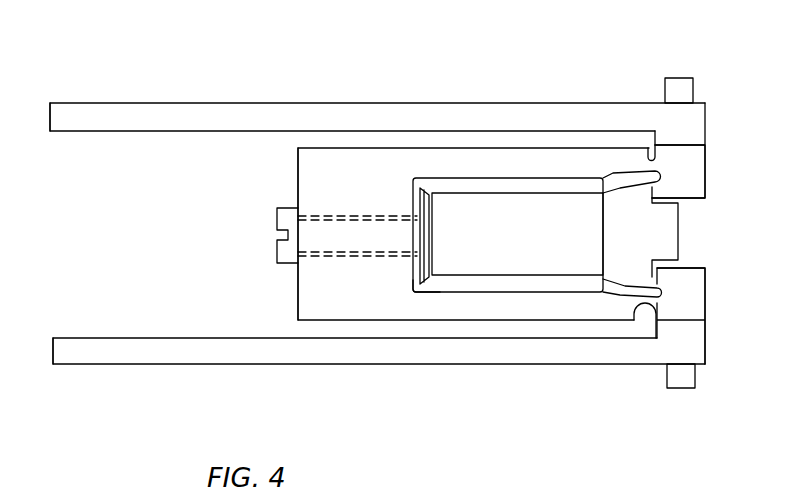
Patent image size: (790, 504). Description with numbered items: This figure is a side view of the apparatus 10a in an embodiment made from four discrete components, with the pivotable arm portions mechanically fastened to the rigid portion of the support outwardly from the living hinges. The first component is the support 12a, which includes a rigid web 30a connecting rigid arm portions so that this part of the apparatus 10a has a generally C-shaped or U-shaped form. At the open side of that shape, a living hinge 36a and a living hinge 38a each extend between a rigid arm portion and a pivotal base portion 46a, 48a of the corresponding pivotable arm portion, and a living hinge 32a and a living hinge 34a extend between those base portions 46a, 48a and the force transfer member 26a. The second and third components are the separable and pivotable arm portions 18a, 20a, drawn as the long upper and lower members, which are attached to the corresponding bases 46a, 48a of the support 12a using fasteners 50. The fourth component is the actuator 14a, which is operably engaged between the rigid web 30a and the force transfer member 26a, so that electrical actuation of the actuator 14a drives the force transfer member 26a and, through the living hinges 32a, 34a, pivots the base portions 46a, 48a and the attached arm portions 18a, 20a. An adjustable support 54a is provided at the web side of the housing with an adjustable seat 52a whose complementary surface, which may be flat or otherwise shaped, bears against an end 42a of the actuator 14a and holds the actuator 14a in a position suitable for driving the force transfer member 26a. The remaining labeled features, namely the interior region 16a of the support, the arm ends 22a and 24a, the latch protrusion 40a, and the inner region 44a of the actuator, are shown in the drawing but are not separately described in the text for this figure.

The apparatus 10a is at (370, 42).
The support 12a is at (384, 141).
The actuator 14a is at (513, 270).
The housing interior cavity 16a is at (319, 184).
The pivotable arm portion 18a is at (105, 105).
The pivotable arm portion 20a is at (142, 363).
The upper rail end 22a is at (85, 132).
The lower rail end 24a is at (92, 338).
The force transfer member 26a is at (706, 238).
The rigid web 30a is at (308, 300).
The living hinge 32a is at (605, 196).
The living hinge 34a is at (660, 284).
The living hinge 36a is at (652, 162).
The living hinge 38a is at (638, 316).
The latch protrusion 40a is at (603, 268).
The end of the actuator 42a is at (430, 232).
The inner recess 44a is at (610, 222).
The pivotal base portion 46a is at (696, 186).
The pivotal base portion 48a is at (706, 293).
The fasteners 50 is at (667, 80).
The adjustable seat 52a is at (440, 268).
The adjustable support 54a is at (277, 251).